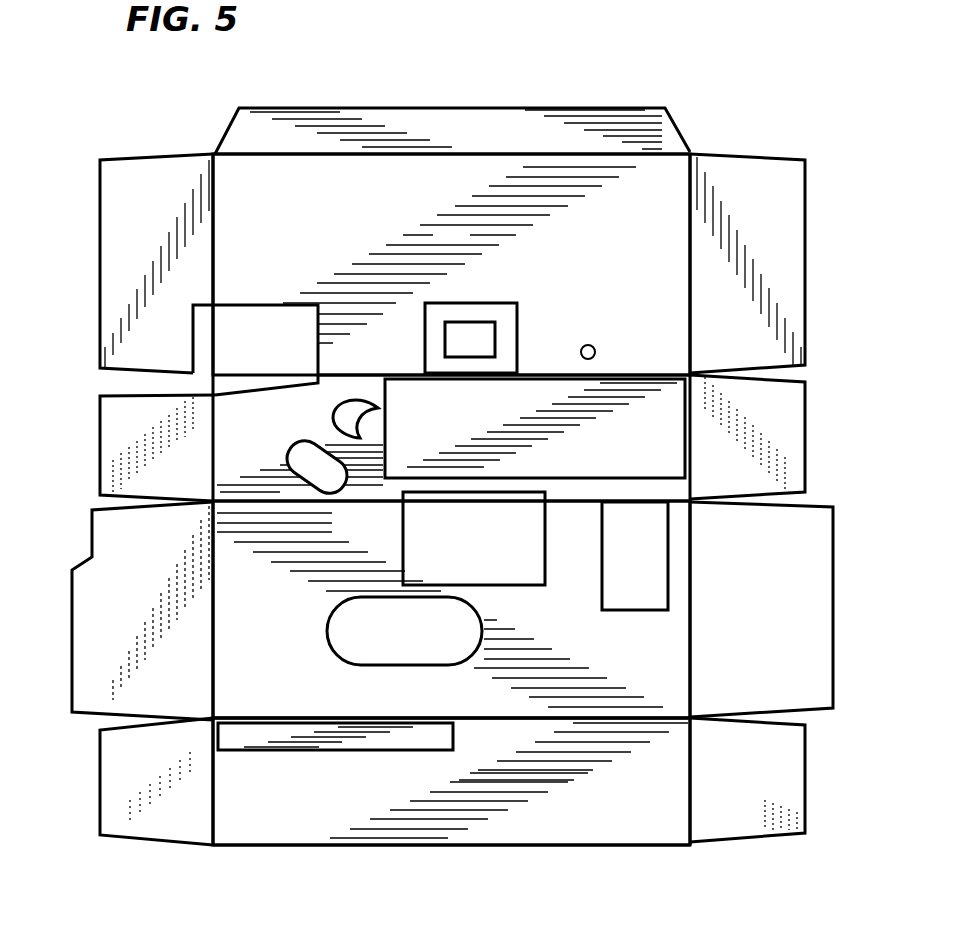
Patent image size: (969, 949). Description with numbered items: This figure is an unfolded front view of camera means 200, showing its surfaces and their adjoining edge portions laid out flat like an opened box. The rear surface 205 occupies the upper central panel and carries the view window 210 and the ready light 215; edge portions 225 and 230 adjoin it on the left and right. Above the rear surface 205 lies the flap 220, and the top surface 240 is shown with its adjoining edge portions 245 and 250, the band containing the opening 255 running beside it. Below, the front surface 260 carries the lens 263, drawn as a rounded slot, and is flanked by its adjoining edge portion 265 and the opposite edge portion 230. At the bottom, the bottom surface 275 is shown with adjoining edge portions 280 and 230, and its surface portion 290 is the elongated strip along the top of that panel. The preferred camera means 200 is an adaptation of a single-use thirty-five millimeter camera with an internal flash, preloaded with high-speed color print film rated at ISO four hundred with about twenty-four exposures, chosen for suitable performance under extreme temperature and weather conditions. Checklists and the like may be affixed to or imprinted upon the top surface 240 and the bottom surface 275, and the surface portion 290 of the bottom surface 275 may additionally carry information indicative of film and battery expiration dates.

The camera means 200 is at (185, 120).
The rear surface 205 is at (451, 264).
The view window 210 is at (479, 325).
The ready light 215 is at (595, 345).
The top flap 220 is at (450, 117).
The edge portion 225 is at (124, 240).
The edge portion 230 is at (780, 290).
The top surface 240 is at (308, 412).
The edge portion 245 is at (125, 428).
The edge portion 250 is at (775, 450).
The panel opening 255 is at (451, 439).
The front surface 260 is at (451, 605).
The lens 263 is at (377, 605).
The edge portion 265 is at (107, 635).
The bottom surface 275 is at (451, 781).
The edge portion 280 is at (125, 763).
The surface portion 290 is at (447, 735).